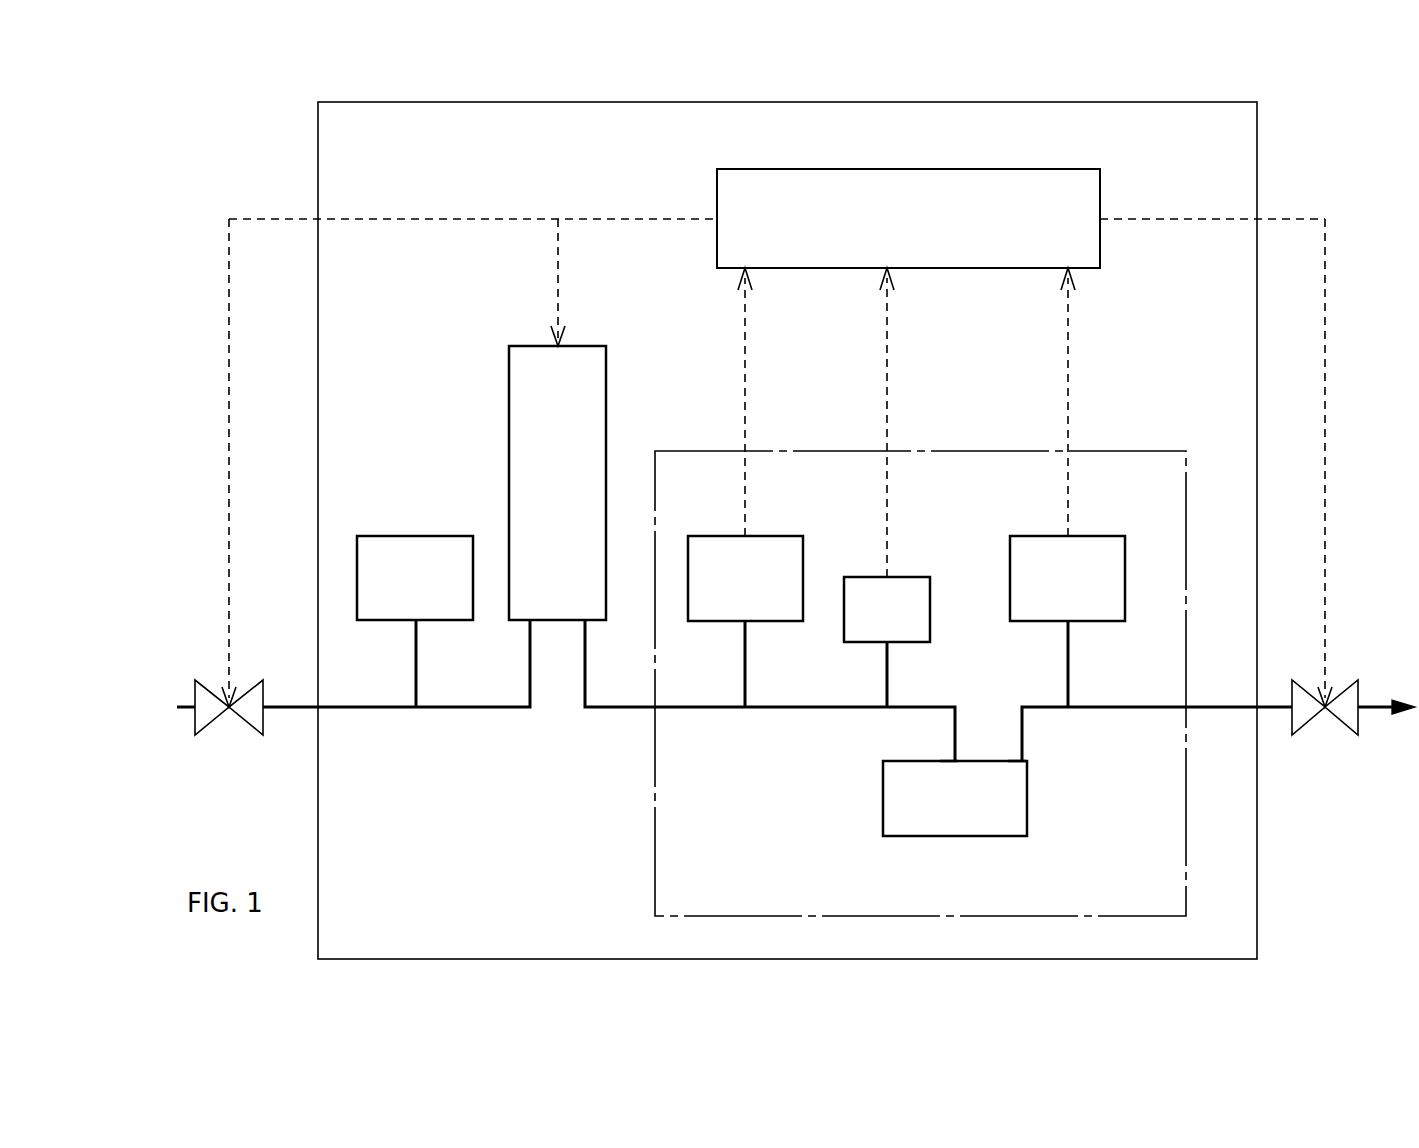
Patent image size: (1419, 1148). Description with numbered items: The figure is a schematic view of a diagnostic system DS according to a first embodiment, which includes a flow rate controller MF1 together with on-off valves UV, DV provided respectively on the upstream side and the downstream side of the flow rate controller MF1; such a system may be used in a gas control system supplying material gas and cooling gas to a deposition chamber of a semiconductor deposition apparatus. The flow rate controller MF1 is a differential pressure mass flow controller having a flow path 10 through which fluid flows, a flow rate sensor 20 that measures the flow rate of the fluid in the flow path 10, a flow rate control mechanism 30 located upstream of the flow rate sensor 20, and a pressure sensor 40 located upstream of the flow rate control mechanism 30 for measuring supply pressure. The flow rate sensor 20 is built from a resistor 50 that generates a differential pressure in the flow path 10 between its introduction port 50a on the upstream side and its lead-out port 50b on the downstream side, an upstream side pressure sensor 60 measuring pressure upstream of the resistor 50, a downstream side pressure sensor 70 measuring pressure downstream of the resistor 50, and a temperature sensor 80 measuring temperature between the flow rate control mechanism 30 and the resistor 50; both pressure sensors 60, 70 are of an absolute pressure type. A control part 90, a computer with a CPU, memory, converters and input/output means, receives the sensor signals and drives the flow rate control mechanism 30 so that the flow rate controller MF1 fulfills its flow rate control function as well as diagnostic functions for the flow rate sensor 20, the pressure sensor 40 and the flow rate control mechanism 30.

The flow path 10 is at (382, 710).
The flow rate sensor 20 is at (672, 450).
The flow rate control mechanism 30 is at (528, 345).
The pressure sensor 40 is at (376, 535).
The resistor 50 is at (942, 837).
The introduction port 50a is at (943, 760).
The lead-out port 50b is at (1010, 760).
The upstream side pressure sensor 60 is at (706, 535).
The downstream side pressure sensor 70 is at (1035, 535).
The temperature sensor 80 is at (851, 577).
The control part 90 is at (878, 168).
The flow rate controller MF1 is at (1238, 101).
The diagnostic system DS is at (183, 170).
The on-off valve UV is at (196, 682).
The on-off valve DV is at (1358, 680).